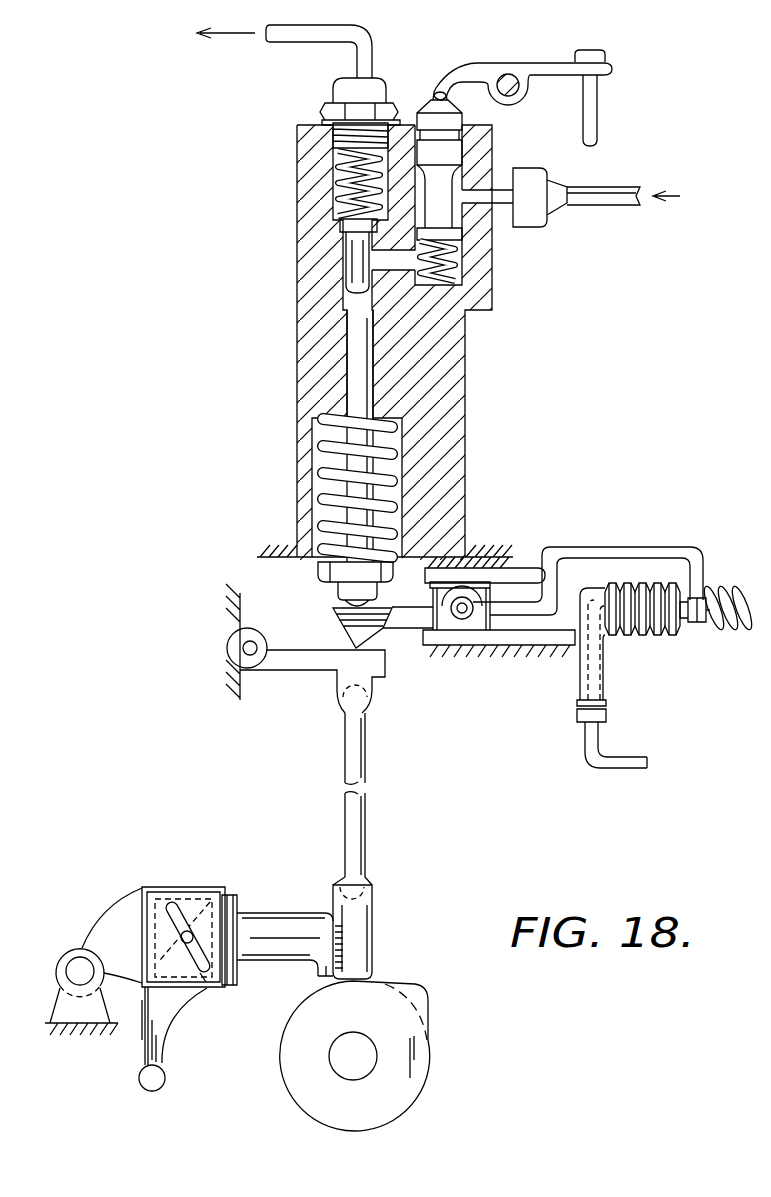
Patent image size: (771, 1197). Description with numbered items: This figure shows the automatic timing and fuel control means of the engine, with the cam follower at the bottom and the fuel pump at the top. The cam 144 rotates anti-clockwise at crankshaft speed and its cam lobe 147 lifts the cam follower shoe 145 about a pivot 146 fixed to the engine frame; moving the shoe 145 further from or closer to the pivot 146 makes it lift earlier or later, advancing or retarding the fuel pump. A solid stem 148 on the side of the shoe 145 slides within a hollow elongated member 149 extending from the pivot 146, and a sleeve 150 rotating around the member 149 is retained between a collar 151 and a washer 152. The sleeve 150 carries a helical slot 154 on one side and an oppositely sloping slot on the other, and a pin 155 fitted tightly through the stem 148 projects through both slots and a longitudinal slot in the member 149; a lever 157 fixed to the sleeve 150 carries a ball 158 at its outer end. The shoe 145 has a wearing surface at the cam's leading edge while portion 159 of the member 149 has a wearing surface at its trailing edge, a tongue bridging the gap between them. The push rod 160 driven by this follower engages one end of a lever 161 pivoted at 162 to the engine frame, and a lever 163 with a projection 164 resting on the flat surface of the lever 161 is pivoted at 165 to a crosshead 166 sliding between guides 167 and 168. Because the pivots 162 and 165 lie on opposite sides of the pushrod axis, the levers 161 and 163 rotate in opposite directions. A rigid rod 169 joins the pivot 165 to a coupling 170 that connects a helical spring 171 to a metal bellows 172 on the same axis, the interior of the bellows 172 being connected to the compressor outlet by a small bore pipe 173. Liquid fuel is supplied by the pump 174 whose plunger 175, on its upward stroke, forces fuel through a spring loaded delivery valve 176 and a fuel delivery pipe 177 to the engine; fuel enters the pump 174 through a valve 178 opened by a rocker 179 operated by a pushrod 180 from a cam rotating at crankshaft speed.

The cam 144 is at (400, 1100).
The cam follower shoe 145 is at (362, 958).
The pivot 146 is at (80, 967).
The cam lobe 147 is at (410, 992).
The solid stem 148 is at (345, 930).
The hollow elongated member 149 is at (284, 937).
The sleeve 150 is at (191, 893).
The collar 151 is at (146, 905).
The washer 152 is at (226, 890).
The helical slot 154 is at (175, 912).
The pin 155 is at (204, 980).
The lever 157 is at (160, 1043).
The ball 158 is at (158, 1080).
The portion of the elongated member 159 is at (320, 973).
The push rod 160 is at (362, 858).
The lever 161 is at (305, 657).
The pivot 162 is at (243, 650).
The lever 163 is at (405, 618).
The projection 164 is at (347, 642).
The pivot 165 is at (458, 631).
The crosshead 166 is at (482, 612).
The guide 167 is at (487, 582).
The guide 168 is at (530, 645).
The rigid rod 169 is at (560, 557).
The coupling 170 is at (690, 623).
The helical spring 171 is at (730, 632).
The metal bellows 172 is at (661, 637).
The small bore pipe 173 is at (620, 770).
The pump 174 is at (310, 335).
The plunger 175 is at (358, 365).
The spring loaded delivery valve 176 is at (355, 255).
The fuel delivery pipe 177 is at (280, 35).
The valve 178 is at (452, 215).
The rocker 179 is at (475, 75).
The pushrod 180 is at (597, 121).